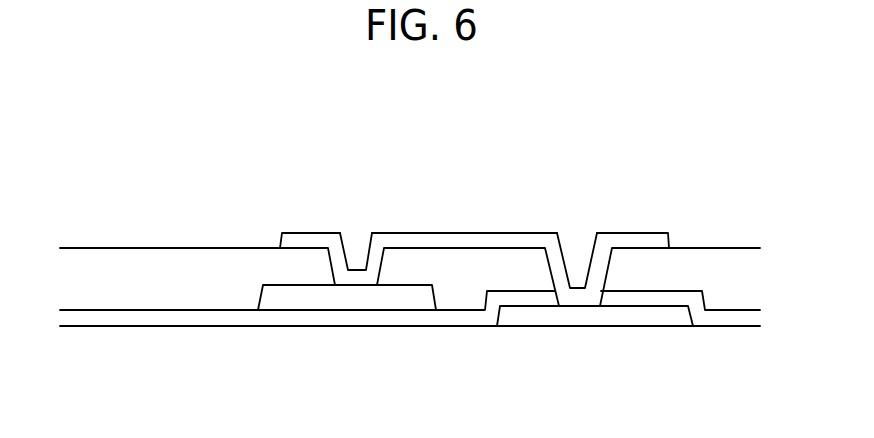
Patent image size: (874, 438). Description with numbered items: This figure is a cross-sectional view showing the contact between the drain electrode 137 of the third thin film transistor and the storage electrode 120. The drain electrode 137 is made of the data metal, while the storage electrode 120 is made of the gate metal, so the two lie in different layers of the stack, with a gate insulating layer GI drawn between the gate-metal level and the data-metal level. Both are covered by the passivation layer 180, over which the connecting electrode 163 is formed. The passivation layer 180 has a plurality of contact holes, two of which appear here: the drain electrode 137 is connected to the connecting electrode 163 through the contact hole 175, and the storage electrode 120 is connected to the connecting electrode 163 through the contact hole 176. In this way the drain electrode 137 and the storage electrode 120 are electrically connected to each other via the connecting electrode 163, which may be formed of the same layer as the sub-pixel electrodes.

The gate insulating layer GI is at (172, 317).
The drain electrode of the third TFT 137 is at (350, 298).
The storage electrode 120 is at (600, 317).
The passivation layer 180 is at (723, 277).
The connecting electrode 163 is at (469, 240).
The contact hole 175 is at (377, 263).
The contact hole 176 is at (603, 267).